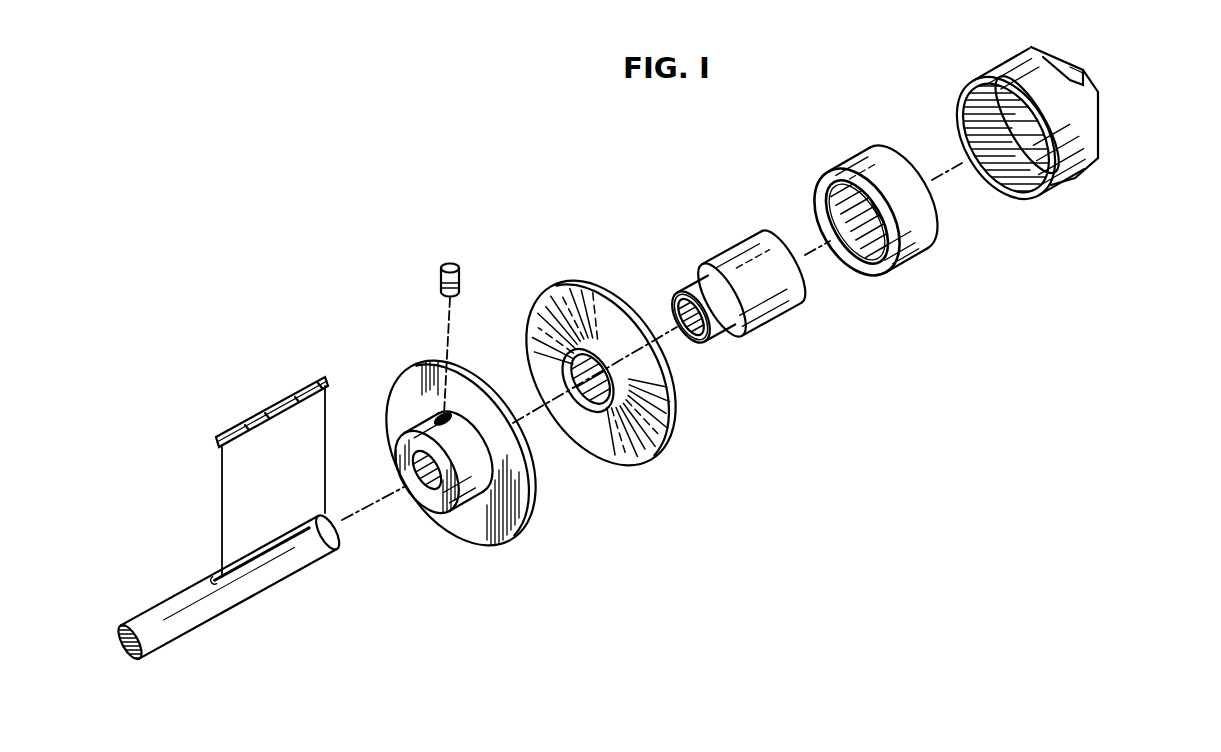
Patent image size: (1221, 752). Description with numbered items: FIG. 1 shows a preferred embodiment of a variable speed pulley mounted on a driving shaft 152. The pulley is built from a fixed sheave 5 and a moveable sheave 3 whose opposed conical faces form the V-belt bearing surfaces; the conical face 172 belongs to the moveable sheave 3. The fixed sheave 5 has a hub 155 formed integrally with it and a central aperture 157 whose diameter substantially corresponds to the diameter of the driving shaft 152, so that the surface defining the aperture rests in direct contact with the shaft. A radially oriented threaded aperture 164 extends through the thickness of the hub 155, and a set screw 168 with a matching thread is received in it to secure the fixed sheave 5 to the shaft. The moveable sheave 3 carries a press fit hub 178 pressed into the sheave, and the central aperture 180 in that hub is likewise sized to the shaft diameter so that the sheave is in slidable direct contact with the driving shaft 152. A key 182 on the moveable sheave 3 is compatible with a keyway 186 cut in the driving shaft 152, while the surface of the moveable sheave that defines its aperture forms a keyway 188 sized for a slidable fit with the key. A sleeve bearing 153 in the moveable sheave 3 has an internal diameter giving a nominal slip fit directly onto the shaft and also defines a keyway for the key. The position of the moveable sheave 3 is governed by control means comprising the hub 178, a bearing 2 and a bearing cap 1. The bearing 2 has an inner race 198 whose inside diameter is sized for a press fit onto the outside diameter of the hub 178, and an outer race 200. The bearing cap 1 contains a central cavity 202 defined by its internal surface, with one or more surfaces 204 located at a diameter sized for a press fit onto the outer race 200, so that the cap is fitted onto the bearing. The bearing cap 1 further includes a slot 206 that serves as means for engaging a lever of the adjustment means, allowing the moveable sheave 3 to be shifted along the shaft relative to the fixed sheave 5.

The bearing cap 1 is at (1080, 177).
The bearing 2 is at (920, 248).
The moveable sheave 3 is at (607, 400).
The fixed sheave 5 is at (523, 527).
The driving shaft 152 is at (197, 627).
The sleeve bearing 153 is at (708, 340).
The hub 155 is at (473, 497).
The central aperture 157 is at (420, 480).
The radially oriented threaded aperture 164 is at (443, 418).
The set screw 168 is at (458, 282).
The conical face 172 is at (627, 450).
The press fit hub 178 is at (773, 307).
The central aperture 180 is at (668, 308).
The key 182 is at (248, 422).
The keyway 186 is at (308, 536).
The keyway 188 is at (688, 283).
The inner race 198 is at (865, 270).
The outer race 200 is at (823, 175).
The central cavity 202 is at (992, 120).
The surfaces 204 is at (1002, 167).
The slot 206 is at (1103, 127).